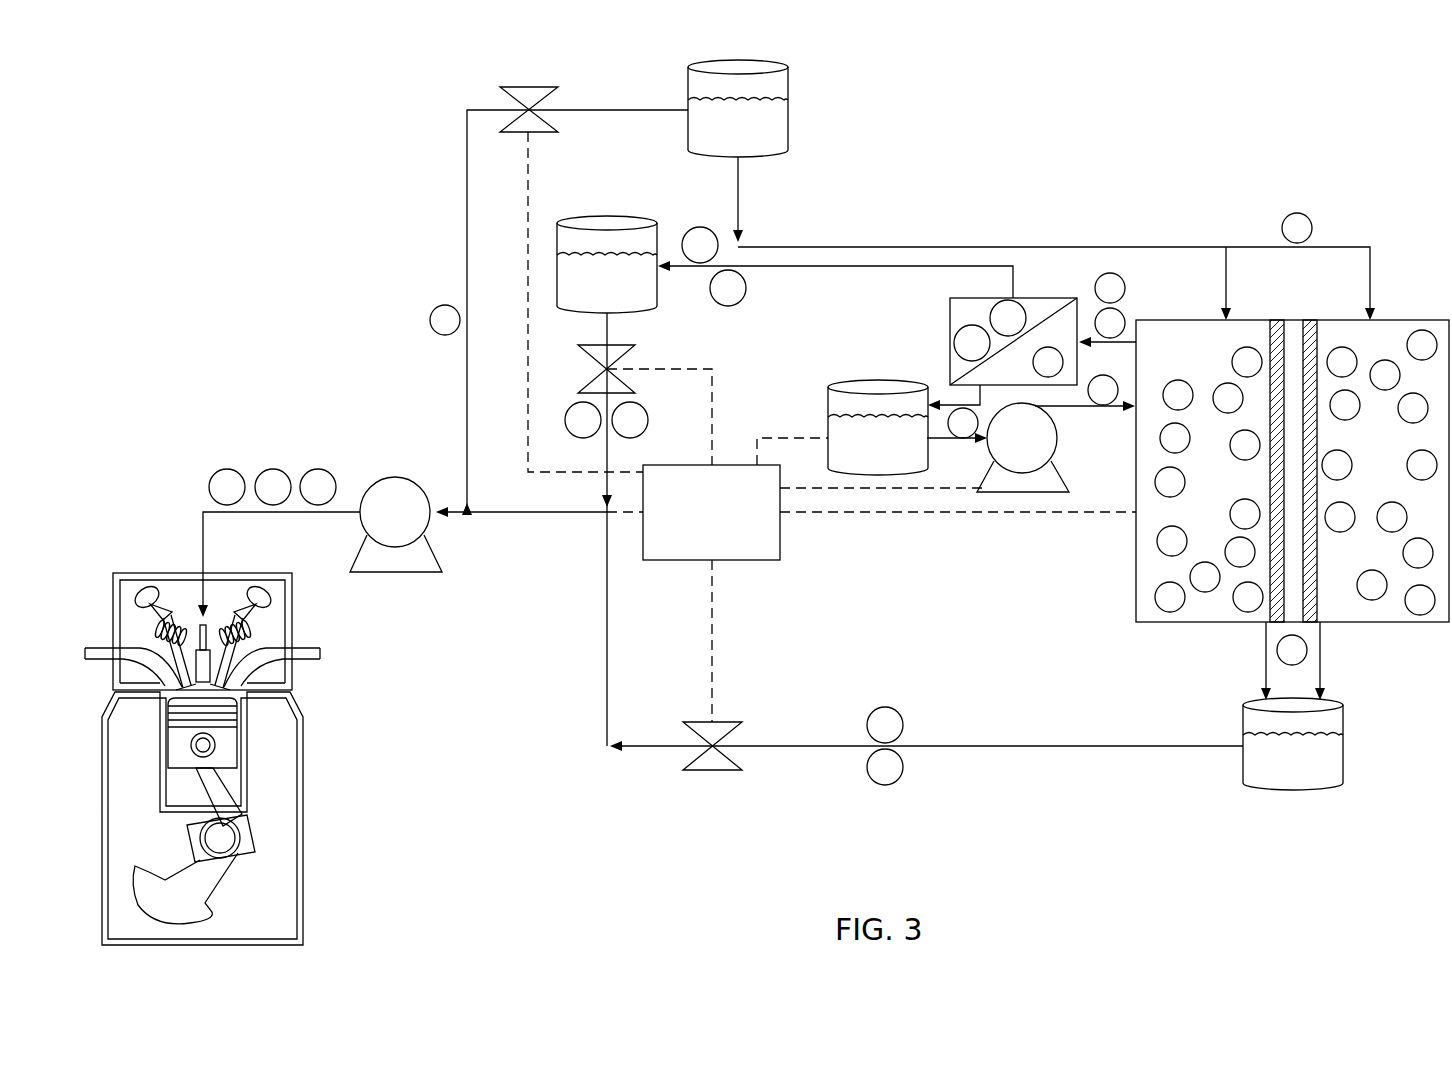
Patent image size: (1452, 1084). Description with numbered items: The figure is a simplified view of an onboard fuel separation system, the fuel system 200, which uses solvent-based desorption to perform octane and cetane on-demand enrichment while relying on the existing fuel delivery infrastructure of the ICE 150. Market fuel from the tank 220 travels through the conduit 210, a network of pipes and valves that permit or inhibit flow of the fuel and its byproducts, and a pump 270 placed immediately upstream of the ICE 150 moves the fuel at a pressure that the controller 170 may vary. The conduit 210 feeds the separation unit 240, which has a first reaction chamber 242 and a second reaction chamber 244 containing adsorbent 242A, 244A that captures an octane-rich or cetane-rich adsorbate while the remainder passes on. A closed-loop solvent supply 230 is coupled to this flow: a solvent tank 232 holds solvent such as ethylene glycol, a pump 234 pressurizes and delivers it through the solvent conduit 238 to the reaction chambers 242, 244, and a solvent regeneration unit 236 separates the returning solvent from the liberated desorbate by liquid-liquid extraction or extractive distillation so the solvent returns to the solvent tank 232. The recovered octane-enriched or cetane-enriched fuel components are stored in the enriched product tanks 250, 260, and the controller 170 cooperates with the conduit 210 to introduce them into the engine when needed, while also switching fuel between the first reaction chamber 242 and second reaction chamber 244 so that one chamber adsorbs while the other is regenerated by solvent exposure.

The ICE 150 is at (303, 763).
The controller 170 is at (690, 525).
The fuel system 200 is at (1262, 168).
The conduit 210 is at (346, 512).
The tank 220 is at (716, 138).
The solvent supply 230 is at (913, 298).
The solvent tank 232 is at (856, 459).
The pump 234 is at (1022, 492).
The solvent regeneration unit 236 is at (950, 368).
The solvent conduit 238 is at (1130, 342).
The separation unit 240 is at (1292, 407).
The first reaction chamber 242 is at (1196, 492).
The adsorbent 242A is at (1276, 320).
The second reaction chamber 244 is at (1356, 477).
The adsorbent 244A is at (1310, 320).
The enriched product tank 250 is at (1271, 777).
The enriched product tank 260 is at (585, 297).
The pump 270 is at (420, 572).